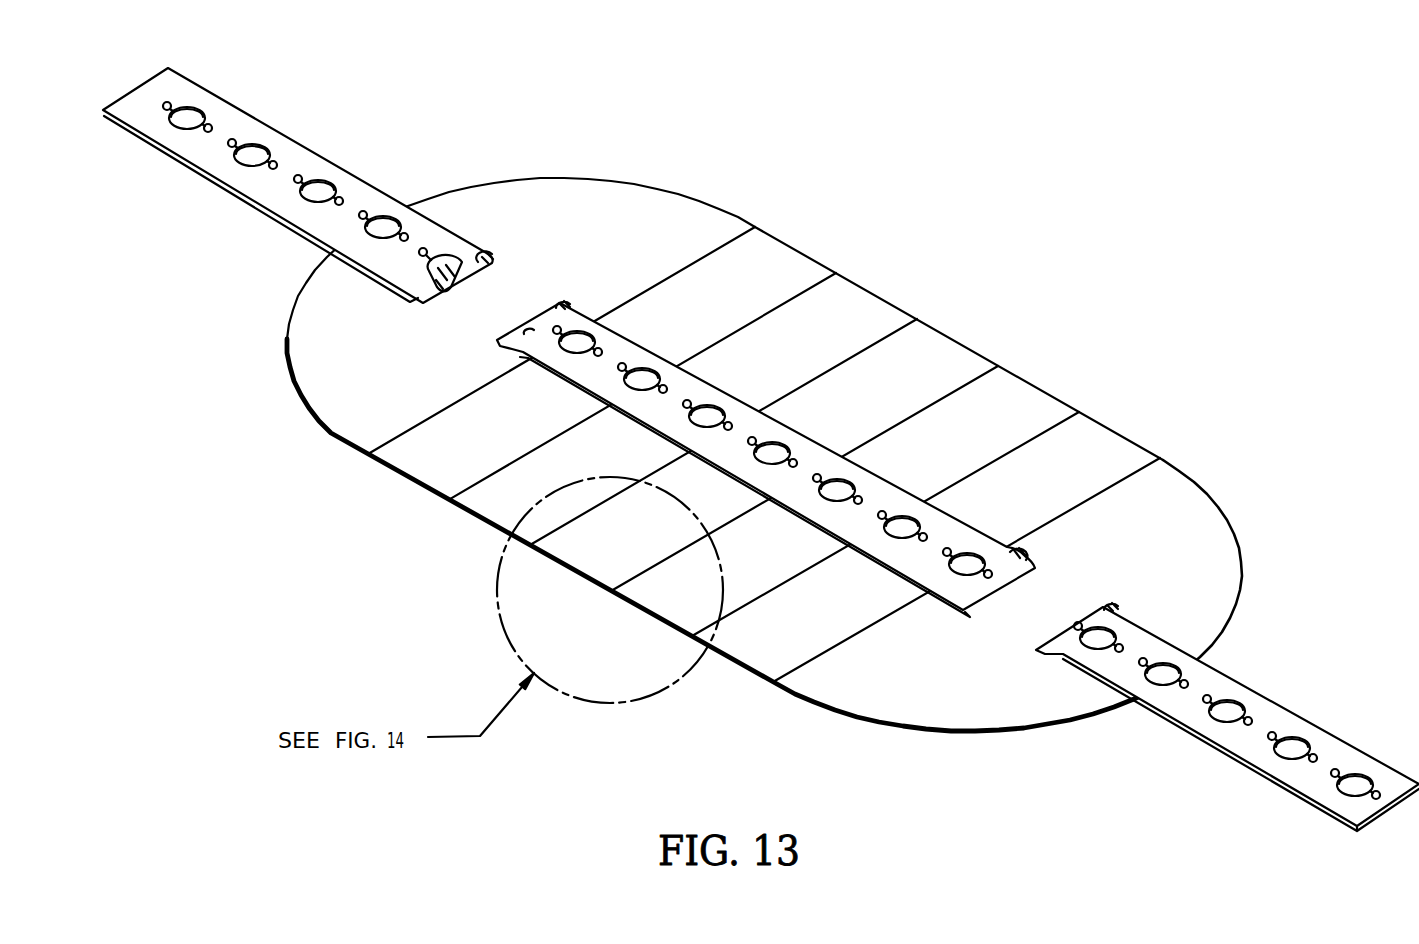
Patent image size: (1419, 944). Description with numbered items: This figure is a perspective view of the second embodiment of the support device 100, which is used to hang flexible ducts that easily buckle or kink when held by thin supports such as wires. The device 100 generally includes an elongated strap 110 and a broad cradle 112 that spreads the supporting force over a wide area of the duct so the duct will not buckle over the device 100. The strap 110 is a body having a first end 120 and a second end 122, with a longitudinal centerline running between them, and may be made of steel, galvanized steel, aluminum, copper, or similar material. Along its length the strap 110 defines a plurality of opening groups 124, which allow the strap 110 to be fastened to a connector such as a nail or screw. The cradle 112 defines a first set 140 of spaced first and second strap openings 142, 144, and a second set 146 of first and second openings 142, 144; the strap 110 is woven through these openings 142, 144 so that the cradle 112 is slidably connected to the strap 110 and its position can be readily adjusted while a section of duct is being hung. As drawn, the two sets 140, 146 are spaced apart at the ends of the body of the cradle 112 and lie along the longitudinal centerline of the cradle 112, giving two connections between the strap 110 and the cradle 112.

The support device 100 is at (977, 237).
The strap 110 is at (817, 458).
The cradle 112 is at (757, 280).
The first end 120 is at (286, 185).
The second end 122 is at (1357, 810).
The opening groups 124 is at (130, 110).
The first set of strap openings 140 is at (398, 370).
The first strap opening 142 is at (492, 252).
The second strap opening 144 is at (568, 303).
The second set of strap openings 146 is at (967, 653).